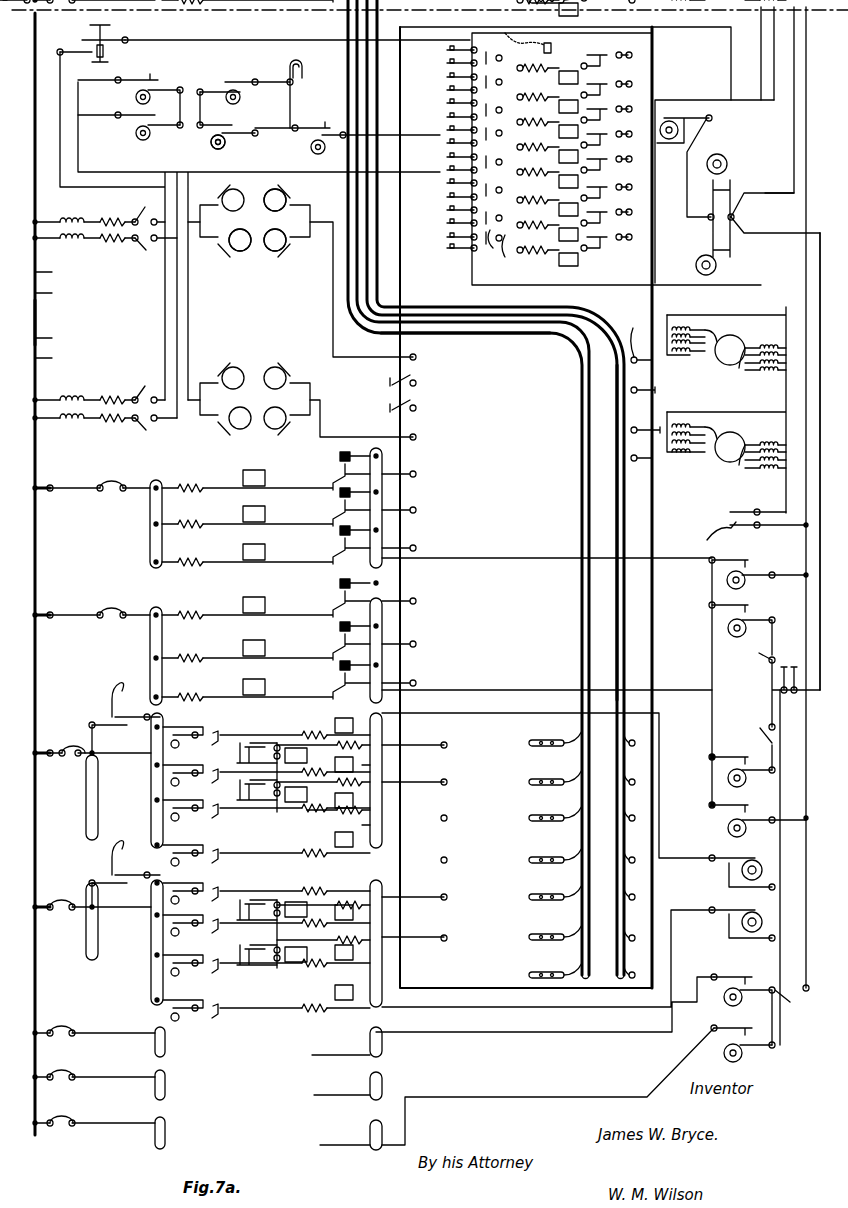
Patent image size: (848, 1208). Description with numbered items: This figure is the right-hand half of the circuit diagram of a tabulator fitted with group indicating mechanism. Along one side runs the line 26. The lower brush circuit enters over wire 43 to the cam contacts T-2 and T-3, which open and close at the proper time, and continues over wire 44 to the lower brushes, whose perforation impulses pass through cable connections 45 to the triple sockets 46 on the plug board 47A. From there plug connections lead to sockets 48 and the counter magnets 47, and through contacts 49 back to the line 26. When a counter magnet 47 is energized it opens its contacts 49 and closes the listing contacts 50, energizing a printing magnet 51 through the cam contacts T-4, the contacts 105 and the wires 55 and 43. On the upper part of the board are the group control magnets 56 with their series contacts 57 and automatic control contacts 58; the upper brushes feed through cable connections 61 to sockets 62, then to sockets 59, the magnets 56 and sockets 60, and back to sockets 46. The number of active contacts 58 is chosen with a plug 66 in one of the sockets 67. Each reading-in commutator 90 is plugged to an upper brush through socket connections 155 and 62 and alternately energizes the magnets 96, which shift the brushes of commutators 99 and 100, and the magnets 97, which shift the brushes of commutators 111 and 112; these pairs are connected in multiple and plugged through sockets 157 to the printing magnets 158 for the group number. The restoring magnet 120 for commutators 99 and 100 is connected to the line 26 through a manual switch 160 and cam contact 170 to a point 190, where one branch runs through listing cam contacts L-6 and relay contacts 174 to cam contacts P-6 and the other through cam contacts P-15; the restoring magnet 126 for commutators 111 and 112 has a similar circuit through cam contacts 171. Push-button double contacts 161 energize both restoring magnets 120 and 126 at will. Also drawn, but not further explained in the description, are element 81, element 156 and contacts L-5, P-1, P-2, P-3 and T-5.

The line 26 is at (38, 325).
The wire 43 is at (794, 62).
The wire 44 is at (731, 27).
The cable connections 45 is at (503, 337).
The triple sockets 46 is at (531, 812).
The counter magnets 47 is at (296, 746).
The plug board 47A is at (555, 645).
The sockets 48 is at (447, 745).
The contacts 49 is at (238, 742).
The listing contacts 50 is at (272, 742).
The printing magnet 51 is at (356, 766).
The wires 55 is at (820, 390).
The group control magnets 56 is at (563, 76).
The series contacts 57 is at (612, 56).
The automatic control contacts 58 is at (439, 73).
The sockets 59 is at (626, 86).
The sockets 60 is at (524, 116).
The cable connections 61 is at (617, 380).
The sockets 62 is at (640, 782).
The plug 66 is at (553, 48).
The sockets 67 is at (508, 233).
The frame 81 is at (698, 110).
The reading-in commutator 90 is at (740, 337).
The magnets 96 is at (687, 357).
The magnets 97 is at (764, 373).
The commutator 99 is at (255, 218).
The commutator 100 is at (290, 198).
The contacts 105 is at (788, 666).
The commutator 111 is at (242, 252).
The commutator 112 is at (280, 252).
The restoring magnet 120 is at (80, 220).
The restoring magnet 126 is at (82, 247).
The socket connections 155 is at (631, 458).
The contact bank 156 is at (414, 270).
The sockets 157 is at (418, 362).
The printing magnets 158 is at (263, 480).
The switch 160 is at (145, 251).
The double contacts 161 is at (112, 50).
The cam contact 170 is at (160, 83).
The cam contacts 171 is at (148, 139).
The relay contacts 174 is at (313, 78).
The point 190 is at (200, 130).
The relay L-5 is at (743, 624).
The listing cam contacts L-6 is at (220, 82).
The relay P-1 is at (758, 808).
The relay P-2 is at (750, 1009).
The relay P-3 is at (745, 1044).
The cam contacts P-6 is at (531, 355).
The cam contacts P-15 is at (239, 148).
The cam contacts T-2 is at (738, 186).
The cam contacts T-3 is at (721, 268).
The cam contacts T-4 is at (732, 872).
The relay T-5 is at (732, 924).